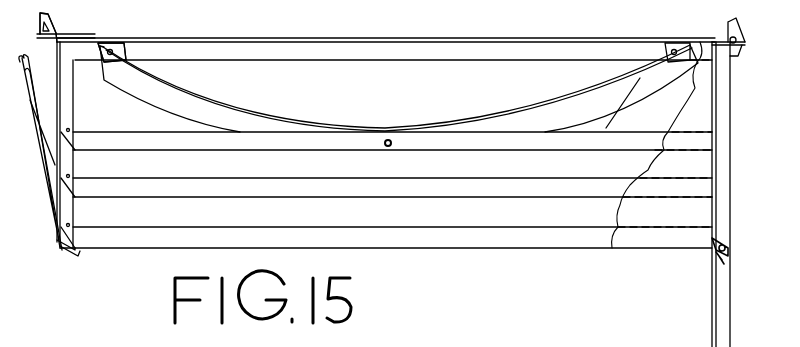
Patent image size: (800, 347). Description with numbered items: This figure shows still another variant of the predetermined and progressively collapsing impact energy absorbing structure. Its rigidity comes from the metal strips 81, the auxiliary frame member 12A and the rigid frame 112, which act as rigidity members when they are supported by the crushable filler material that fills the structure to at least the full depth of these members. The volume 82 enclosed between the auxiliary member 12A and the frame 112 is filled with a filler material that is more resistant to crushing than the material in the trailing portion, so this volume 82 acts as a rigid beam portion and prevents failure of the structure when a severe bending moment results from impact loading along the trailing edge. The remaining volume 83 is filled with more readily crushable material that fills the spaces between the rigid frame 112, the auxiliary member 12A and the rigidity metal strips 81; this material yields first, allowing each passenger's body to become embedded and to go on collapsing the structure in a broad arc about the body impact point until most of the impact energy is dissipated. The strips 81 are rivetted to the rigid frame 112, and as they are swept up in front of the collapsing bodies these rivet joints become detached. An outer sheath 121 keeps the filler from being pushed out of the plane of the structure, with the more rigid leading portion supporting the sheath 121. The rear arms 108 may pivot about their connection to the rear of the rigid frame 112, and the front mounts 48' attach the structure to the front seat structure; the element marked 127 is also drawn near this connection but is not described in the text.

The front mount 48' is at (74, 21).
The rigid frame 112 is at (290, 37).
The volume 82 is at (398, 94).
The auxiliary frame member 12A is at (604, 106).
The metal strips 81 is at (120, 130).
The remaining volume 83 is at (386, 189).
The sheath 121 is at (648, 172).
The bolt 127 is at (732, 250).
The rear arms 108 is at (46, 194).